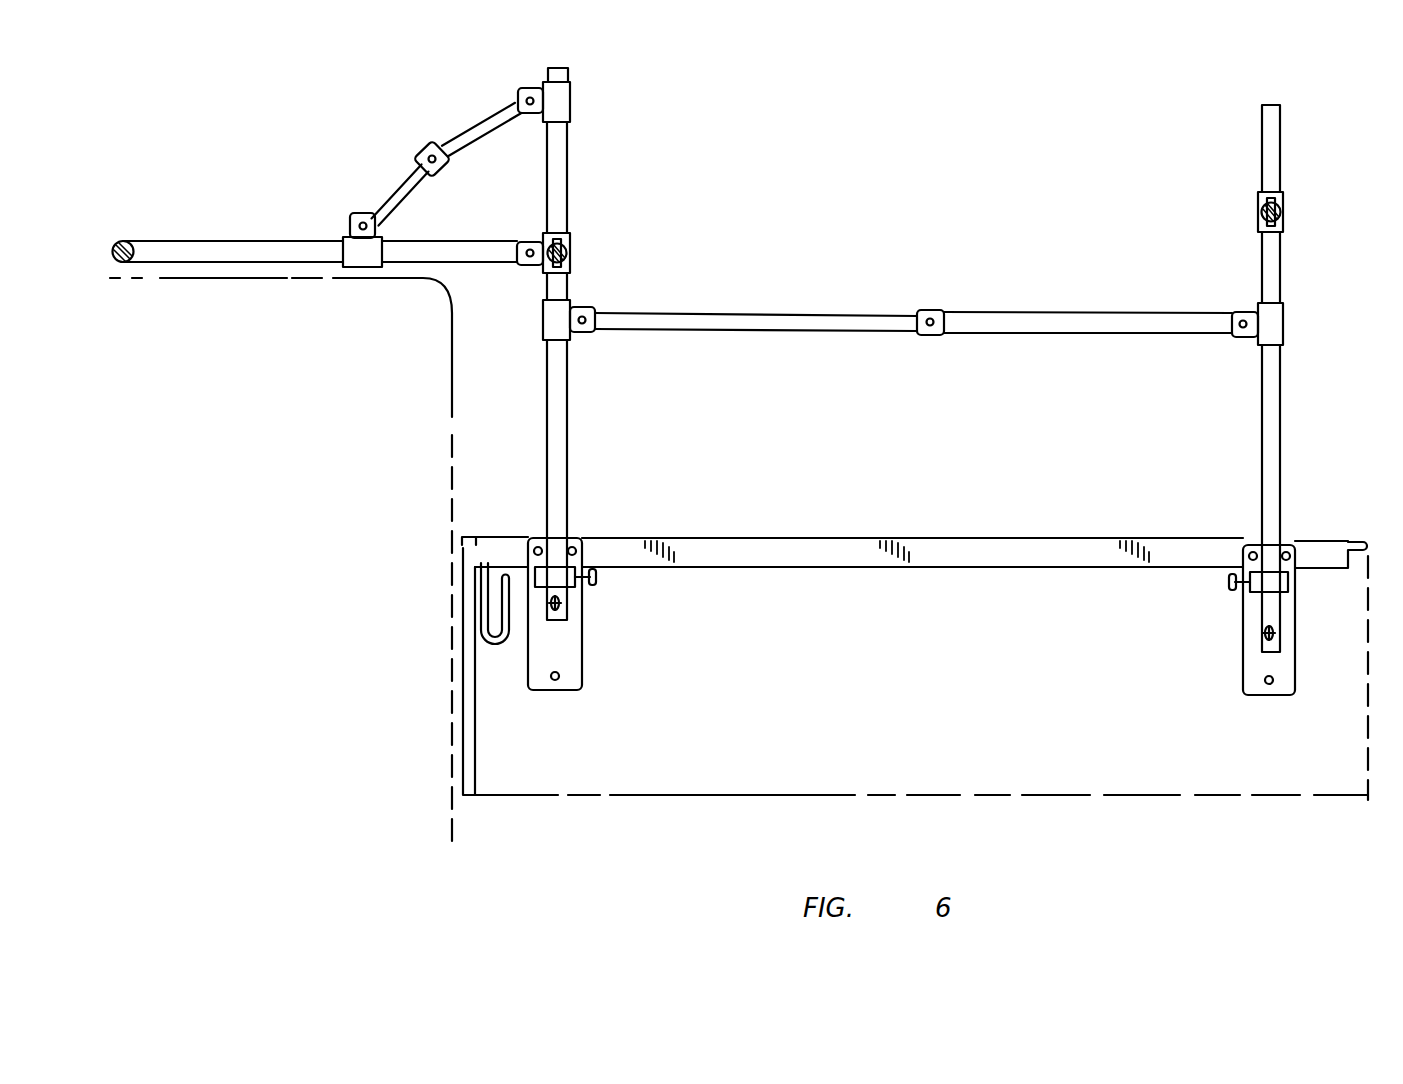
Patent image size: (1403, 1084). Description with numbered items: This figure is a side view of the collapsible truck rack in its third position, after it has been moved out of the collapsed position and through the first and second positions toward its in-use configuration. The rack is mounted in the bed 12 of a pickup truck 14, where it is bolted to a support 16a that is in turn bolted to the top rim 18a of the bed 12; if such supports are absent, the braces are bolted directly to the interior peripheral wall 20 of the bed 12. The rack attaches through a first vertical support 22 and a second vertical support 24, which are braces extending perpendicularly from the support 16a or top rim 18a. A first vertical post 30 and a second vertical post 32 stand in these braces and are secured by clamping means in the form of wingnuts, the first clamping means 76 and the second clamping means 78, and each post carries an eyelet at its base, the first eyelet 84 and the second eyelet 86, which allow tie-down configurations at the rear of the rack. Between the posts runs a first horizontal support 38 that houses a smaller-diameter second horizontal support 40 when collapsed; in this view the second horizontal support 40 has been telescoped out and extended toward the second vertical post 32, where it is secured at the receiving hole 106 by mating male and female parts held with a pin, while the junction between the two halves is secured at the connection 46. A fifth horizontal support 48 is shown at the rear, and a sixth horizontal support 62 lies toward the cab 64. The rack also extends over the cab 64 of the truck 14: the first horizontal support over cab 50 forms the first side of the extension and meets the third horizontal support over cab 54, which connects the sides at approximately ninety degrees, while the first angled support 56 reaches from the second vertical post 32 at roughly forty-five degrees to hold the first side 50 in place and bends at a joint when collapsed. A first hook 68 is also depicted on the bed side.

The bed 12 is at (672, 797).
The truck 14 is at (243, 262).
The support 16a is at (1162, 540).
The top rim of bed 18a is at (1360, 538).
The interior peripheral wall of bed 20 is at (538, 749).
The first vertical support 22 is at (1250, 688).
The second vertical support 24 is at (565, 652).
The first vertical post 30 is at (1270, 381).
The second vertical post 32 is at (557, 413).
The first horizontal support 38 is at (1047, 320).
The second horizontal support 40 is at (743, 322).
The connection between 38/40 46 is at (903, 317).
The fifth horizontal support (rear) 48 is at (1255, 222).
The first horizontal support over cab 50 is at (183, 250).
The third horizontal support over cab 54 is at (133, 240).
The first angled support over cab 56 is at (467, 140).
The sixth horizontal support (cab) 62 is at (567, 242).
The cab 64 is at (287, 275).
The first hook 68 is at (490, 648).
The first clamping means 76 is at (1270, 590).
The second clamping means 78 is at (543, 577).
The first eyelet 84 is at (1270, 640).
The second eyelet 86 is at (560, 612).
The first receiving hole between 38/40 106 is at (578, 332).